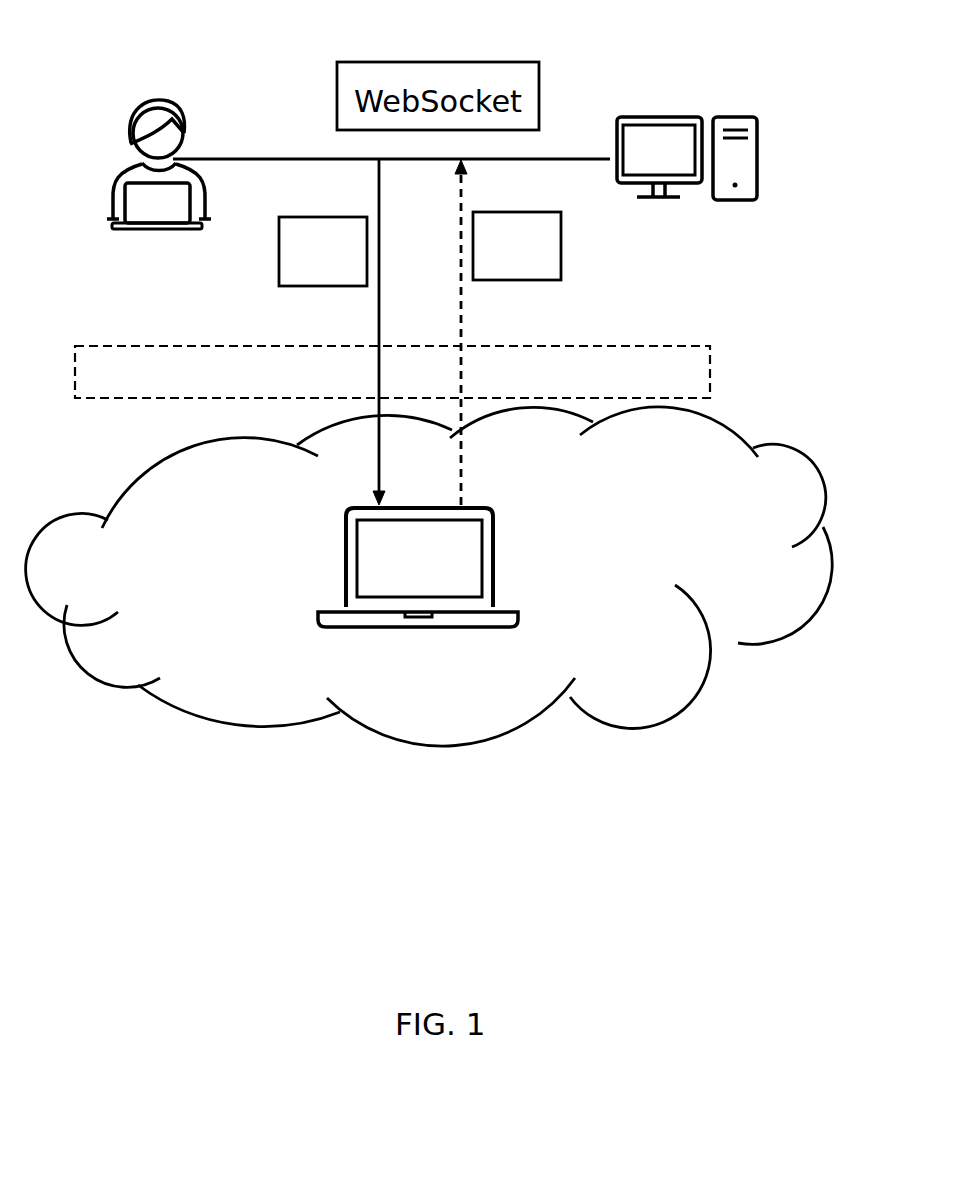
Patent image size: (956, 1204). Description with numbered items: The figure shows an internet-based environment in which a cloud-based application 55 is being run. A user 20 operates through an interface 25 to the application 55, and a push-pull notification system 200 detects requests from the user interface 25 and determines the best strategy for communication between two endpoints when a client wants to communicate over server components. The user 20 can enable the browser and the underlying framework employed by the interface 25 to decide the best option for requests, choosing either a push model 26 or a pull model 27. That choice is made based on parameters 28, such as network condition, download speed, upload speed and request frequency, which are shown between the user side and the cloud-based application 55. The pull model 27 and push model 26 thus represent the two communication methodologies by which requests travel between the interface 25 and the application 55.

The user 20 is at (140, 100).
The interface 25 is at (123, 183).
The push-pull notification system 200 is at (662, 117).
The pull model 27 is at (278, 255).
The push model 26 is at (561, 253).
The parameters 28 is at (110, 346).
The cloud-based application 55 is at (437, 577).